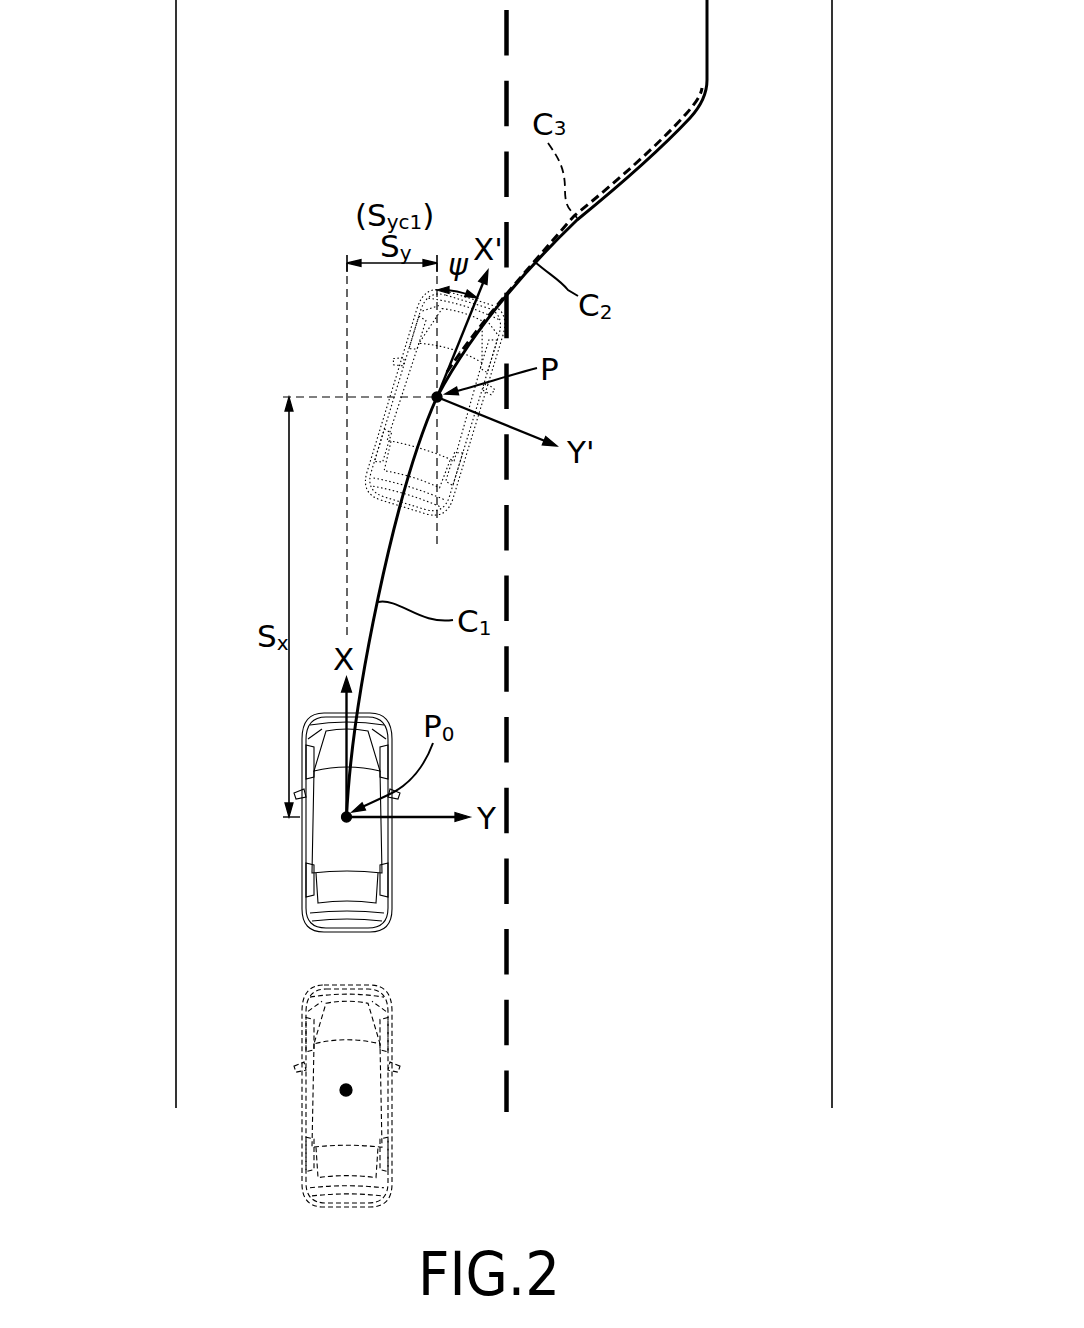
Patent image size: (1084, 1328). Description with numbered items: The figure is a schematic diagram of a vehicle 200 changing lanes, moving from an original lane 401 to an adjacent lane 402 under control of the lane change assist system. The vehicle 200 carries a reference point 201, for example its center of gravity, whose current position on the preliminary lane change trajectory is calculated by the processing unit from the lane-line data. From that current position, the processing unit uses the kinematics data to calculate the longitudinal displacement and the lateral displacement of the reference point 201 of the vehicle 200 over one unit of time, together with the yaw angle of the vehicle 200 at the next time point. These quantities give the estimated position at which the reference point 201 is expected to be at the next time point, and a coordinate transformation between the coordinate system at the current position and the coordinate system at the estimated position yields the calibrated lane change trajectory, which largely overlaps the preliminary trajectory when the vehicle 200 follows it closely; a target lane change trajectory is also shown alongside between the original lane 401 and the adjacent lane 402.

The vehicle 200 is at (305, 842).
The reference point 201 is at (344, 822).
The original lane 401 is at (247, 317).
The adjacent lane 402 is at (780, 327).